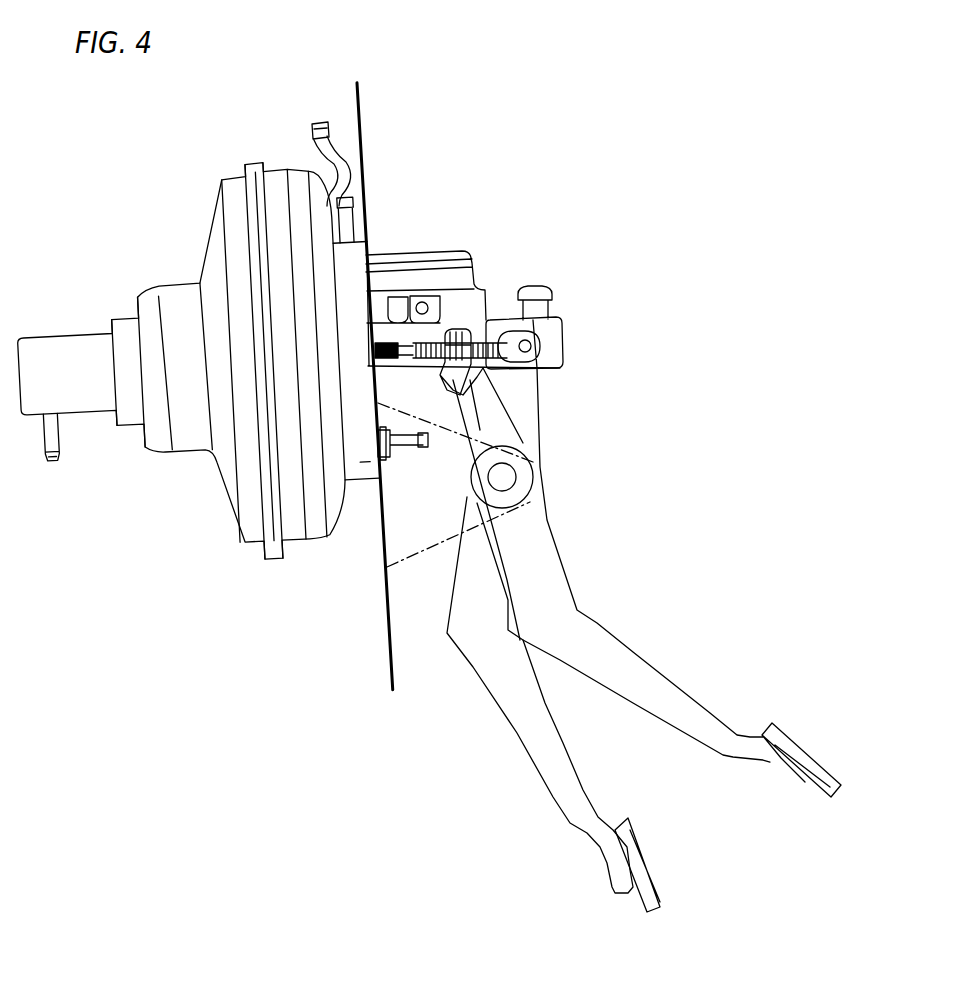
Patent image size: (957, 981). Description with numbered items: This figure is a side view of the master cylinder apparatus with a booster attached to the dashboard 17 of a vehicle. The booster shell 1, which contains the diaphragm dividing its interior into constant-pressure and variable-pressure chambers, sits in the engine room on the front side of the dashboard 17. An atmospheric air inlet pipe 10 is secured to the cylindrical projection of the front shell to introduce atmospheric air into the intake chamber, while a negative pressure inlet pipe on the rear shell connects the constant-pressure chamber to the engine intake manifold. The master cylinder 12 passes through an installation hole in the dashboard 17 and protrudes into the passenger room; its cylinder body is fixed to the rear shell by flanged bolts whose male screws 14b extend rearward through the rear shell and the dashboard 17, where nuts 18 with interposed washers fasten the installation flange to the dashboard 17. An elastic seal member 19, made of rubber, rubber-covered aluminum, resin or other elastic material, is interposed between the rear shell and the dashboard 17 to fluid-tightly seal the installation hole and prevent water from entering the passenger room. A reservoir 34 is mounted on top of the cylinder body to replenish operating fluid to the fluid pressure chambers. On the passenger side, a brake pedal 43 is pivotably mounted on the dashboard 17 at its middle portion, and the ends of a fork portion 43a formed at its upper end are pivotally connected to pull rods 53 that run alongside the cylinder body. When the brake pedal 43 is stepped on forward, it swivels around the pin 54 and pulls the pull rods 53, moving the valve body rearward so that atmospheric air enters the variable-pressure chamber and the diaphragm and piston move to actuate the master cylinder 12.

The booster shell 1 is at (245, 537).
The atmospheric air inlet pipe 10 is at (46, 447).
The master cylinder 12 is at (557, 327).
The male screws 14b is at (412, 445).
The dashboard 17 is at (372, 117).
The nuts 18 is at (385, 458).
The elastic seal member 19 is at (359, 463).
The reservoir 34 is at (447, 257).
The brake pedal 43 is at (637, 665).
The fork portion 43a is at (462, 335).
The pull rods 53 is at (410, 363).
The pin 54 is at (508, 476).